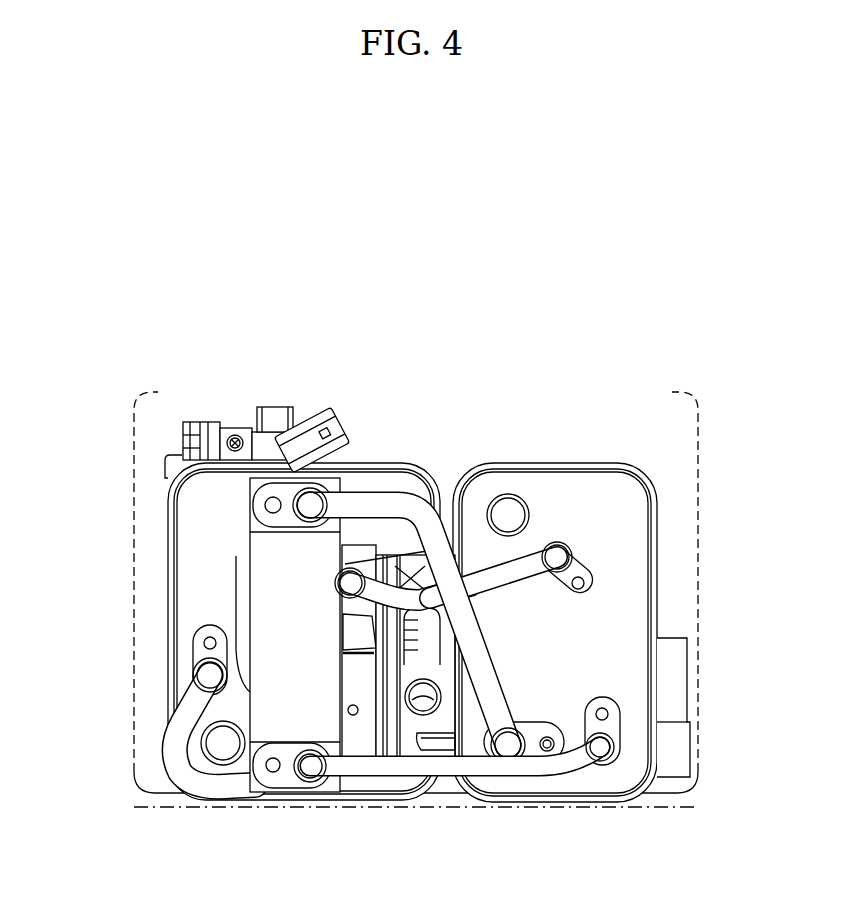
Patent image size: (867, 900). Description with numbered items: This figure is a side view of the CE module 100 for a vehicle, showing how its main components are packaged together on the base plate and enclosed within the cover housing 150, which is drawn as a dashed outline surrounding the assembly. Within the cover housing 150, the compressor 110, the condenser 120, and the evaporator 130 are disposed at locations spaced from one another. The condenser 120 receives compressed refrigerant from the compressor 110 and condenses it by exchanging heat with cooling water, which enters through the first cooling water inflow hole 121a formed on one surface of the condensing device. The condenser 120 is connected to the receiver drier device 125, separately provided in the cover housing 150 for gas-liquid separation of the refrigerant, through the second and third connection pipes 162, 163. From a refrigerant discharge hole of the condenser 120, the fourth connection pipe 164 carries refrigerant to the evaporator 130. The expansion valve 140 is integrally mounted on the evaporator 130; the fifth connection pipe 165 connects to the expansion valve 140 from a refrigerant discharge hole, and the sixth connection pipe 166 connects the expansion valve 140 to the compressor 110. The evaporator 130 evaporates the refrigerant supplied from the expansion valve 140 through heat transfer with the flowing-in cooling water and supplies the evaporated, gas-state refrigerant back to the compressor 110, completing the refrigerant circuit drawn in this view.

The CE module 100 is at (395, 278).
The compressor 110 is at (440, 485).
The condenser 120 is at (674, 532).
The first cooling water inflow hole 121a is at (524, 504).
The receiver drier device 125 is at (280, 590).
The evaporator 130 is at (152, 541).
The expansion valve 140 is at (353, 677).
The cover housing 150 is at (655, 392).
The second connection pipe 162 is at (408, 505).
The third connection pipe 163 is at (437, 768).
The fourth connection pipe 164 is at (522, 598).
The fifth connection pipe 165 is at (213, 782).
The sixth connection pipe 166 is at (375, 545).